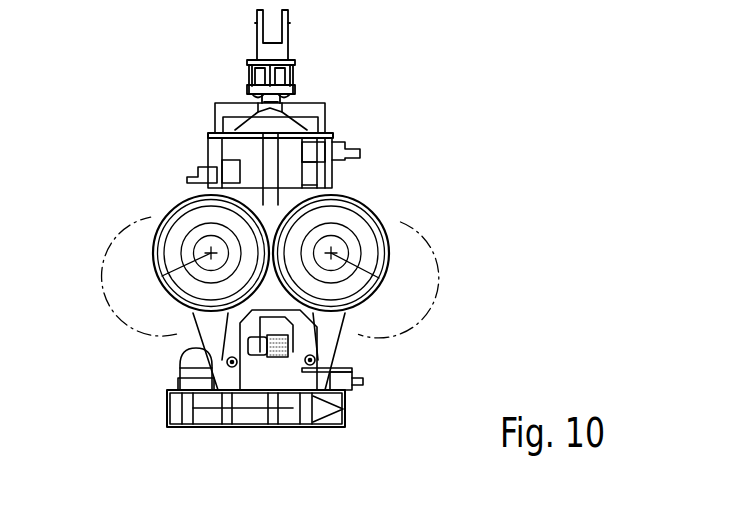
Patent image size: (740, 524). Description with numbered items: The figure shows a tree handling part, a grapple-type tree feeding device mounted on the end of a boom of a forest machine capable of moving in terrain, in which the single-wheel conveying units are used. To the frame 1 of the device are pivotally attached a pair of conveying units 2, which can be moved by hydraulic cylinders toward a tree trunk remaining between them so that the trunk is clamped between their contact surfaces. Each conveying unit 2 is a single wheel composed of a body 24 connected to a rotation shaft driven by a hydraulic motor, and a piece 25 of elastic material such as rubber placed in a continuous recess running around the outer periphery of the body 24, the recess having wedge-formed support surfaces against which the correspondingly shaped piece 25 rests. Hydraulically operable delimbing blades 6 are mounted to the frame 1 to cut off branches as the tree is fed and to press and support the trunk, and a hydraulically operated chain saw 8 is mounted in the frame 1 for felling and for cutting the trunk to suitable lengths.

The frame 1 is at (270, 157).
The conveying unit 2 is at (157, 295).
The delimbing blade 6 is at (344, 142).
The chain saw 8 is at (252, 410).
The wheel body 24 is at (180, 222).
The piece of elastic material 25 is at (178, 203).